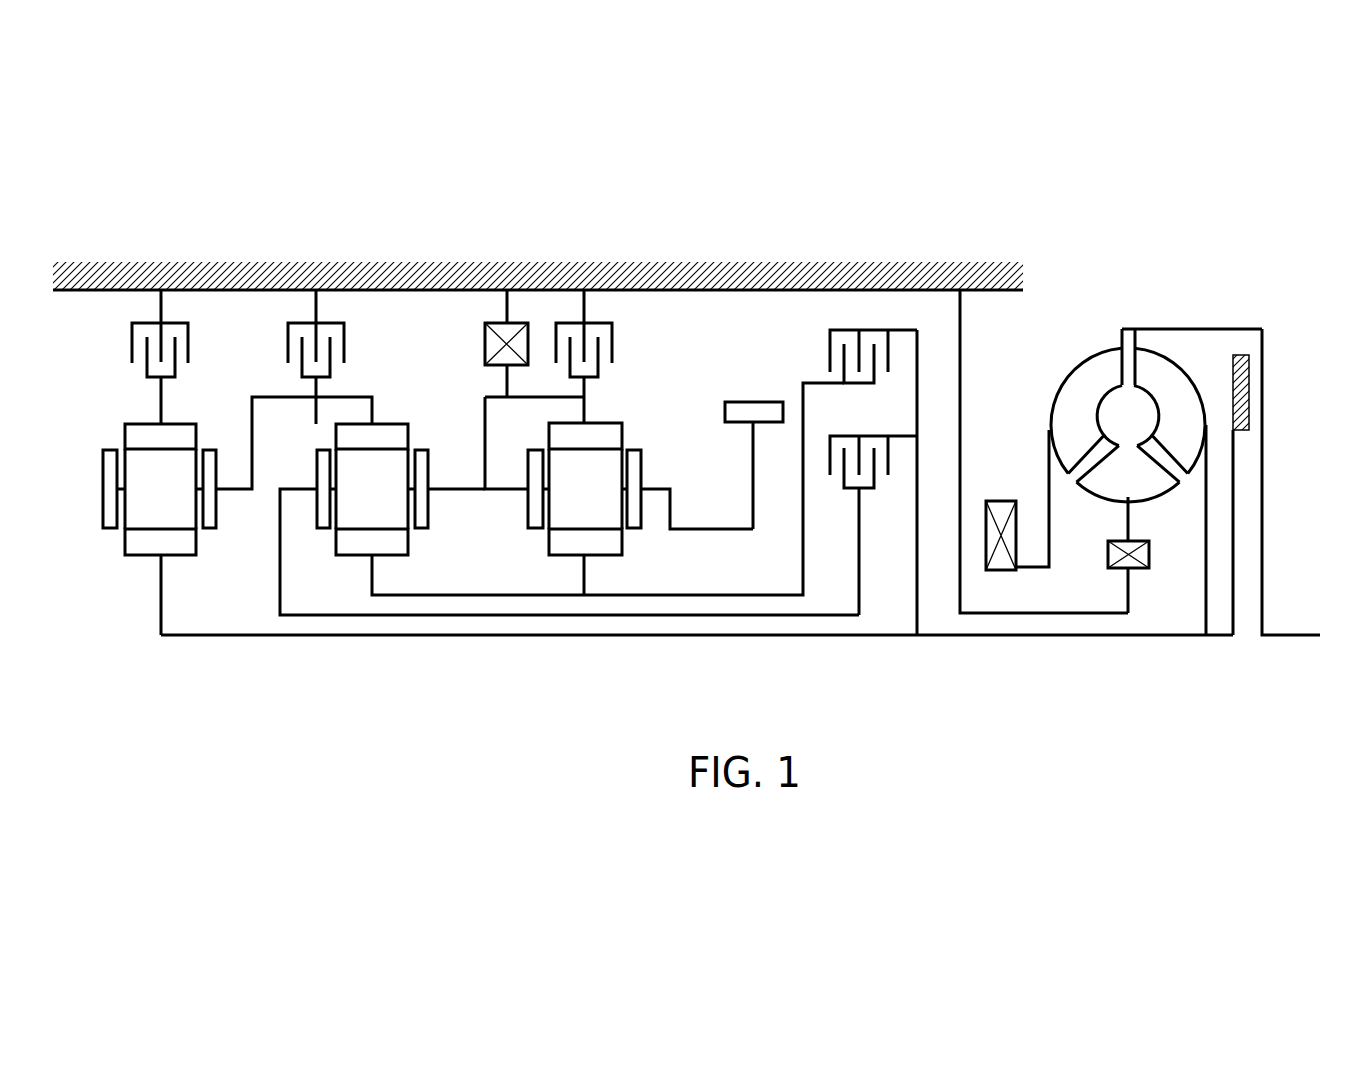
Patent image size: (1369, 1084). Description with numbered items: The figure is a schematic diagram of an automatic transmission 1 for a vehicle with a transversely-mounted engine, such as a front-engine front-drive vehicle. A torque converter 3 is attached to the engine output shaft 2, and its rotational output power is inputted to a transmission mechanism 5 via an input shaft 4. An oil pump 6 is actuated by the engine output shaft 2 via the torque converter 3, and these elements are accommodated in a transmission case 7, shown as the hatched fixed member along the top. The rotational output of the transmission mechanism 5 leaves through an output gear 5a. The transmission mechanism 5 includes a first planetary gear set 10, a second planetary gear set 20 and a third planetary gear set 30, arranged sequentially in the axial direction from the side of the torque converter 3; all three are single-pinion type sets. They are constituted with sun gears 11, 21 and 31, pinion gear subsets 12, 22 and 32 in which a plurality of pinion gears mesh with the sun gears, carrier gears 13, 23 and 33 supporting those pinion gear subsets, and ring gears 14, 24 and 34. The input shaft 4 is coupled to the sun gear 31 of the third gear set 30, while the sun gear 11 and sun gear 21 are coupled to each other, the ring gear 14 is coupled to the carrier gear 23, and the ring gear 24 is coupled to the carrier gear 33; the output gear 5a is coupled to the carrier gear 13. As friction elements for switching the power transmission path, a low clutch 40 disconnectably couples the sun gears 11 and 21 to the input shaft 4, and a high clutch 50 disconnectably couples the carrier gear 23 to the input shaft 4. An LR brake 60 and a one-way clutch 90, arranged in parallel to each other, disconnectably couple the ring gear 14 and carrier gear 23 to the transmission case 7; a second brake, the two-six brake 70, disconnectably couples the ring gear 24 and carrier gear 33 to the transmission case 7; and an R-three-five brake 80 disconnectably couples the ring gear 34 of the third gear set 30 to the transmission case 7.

The automatic transmission 1 is at (1297, 263).
The engine output shaft 2 is at (1280, 635).
The torque converter 3 is at (1223, 316).
The input shaft 4 is at (994, 637).
The transmission mechanism 5 is at (921, 313).
The output gear 5a is at (758, 401).
The oil pump 6 is at (990, 500).
The transmission case 7 is at (833, 280).
The first planetary gear set 10 is at (612, 479).
The sun gear 11 is at (566, 557).
The pinion gear subset 12 is at (566, 512).
The carrier gear 13 is at (528, 500).
The ring gear 14 is at (549, 437).
The second planetary gear set 20 is at (567, 489).
The sun gear 21 is at (352, 550).
The pinion gear subset 22 is at (348, 514).
The carrier gear 23 is at (317, 510).
The ring gear 24 is at (336, 435).
The third planetary gear set 30 is at (216, 499).
The sun gear 31 is at (148, 548).
The pinion gear subset 32 is at (140, 502).
The carrier gear 33 is at (103, 497).
The ring gear 34 is at (125, 432).
The low clutch 40 is at (853, 388).
The high clutch 50 is at (862, 497).
The LR brake 60 is at (615, 349).
The 26 brake 70 is at (343, 349).
The R35 brake 80 is at (190, 349).
The one-way clutch 90 is at (484, 342).